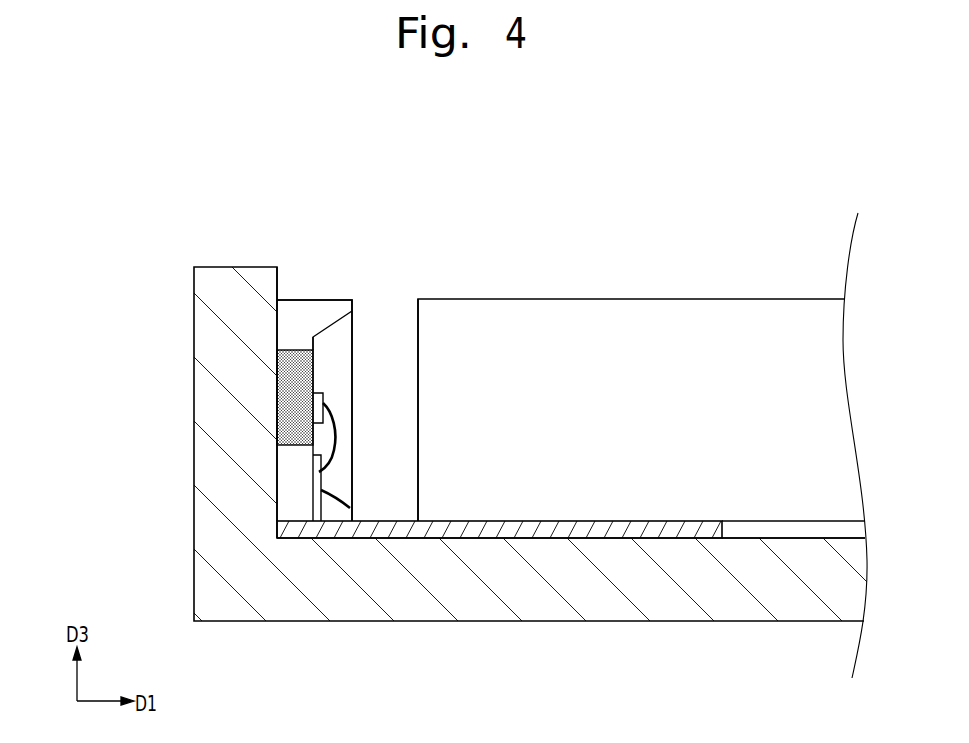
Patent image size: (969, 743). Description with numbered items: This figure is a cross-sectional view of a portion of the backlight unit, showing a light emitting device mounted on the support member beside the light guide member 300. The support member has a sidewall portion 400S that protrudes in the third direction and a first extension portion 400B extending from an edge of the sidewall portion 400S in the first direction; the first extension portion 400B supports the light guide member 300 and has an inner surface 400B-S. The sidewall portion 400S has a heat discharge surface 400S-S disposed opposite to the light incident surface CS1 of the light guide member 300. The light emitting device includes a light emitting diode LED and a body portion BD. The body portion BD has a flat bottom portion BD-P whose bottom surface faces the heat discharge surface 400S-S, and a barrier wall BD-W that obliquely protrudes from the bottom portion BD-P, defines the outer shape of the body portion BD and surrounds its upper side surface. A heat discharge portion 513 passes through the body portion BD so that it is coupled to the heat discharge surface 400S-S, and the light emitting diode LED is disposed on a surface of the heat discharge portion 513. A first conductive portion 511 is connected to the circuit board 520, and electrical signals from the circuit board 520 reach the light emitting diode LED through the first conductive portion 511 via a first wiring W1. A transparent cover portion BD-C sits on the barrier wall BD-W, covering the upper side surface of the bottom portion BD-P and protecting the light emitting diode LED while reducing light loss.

The light guide member 300 is at (633, 318).
The light incident surface CS1 is at (417, 323).
The sidewall portion 400S is at (223, 518).
The heat discharge surface 400S-S is at (278, 283).
The first extension portion 400B is at (385, 583).
The inner surface 400B-S is at (798, 534).
The circuit board 520 is at (517, 530).
The body portion BD is at (93, 285).
The cover portion BD-C is at (357, 327).
The barrier wall BD-W is at (322, 307).
The bottom portion BD-P is at (292, 341).
The light emitting diode LED is at (215, 452).
The heat discharge portion 513 is at (288, 423).
The first conductive portion 511 is at (318, 488).
The first wiring W1 is at (335, 438).